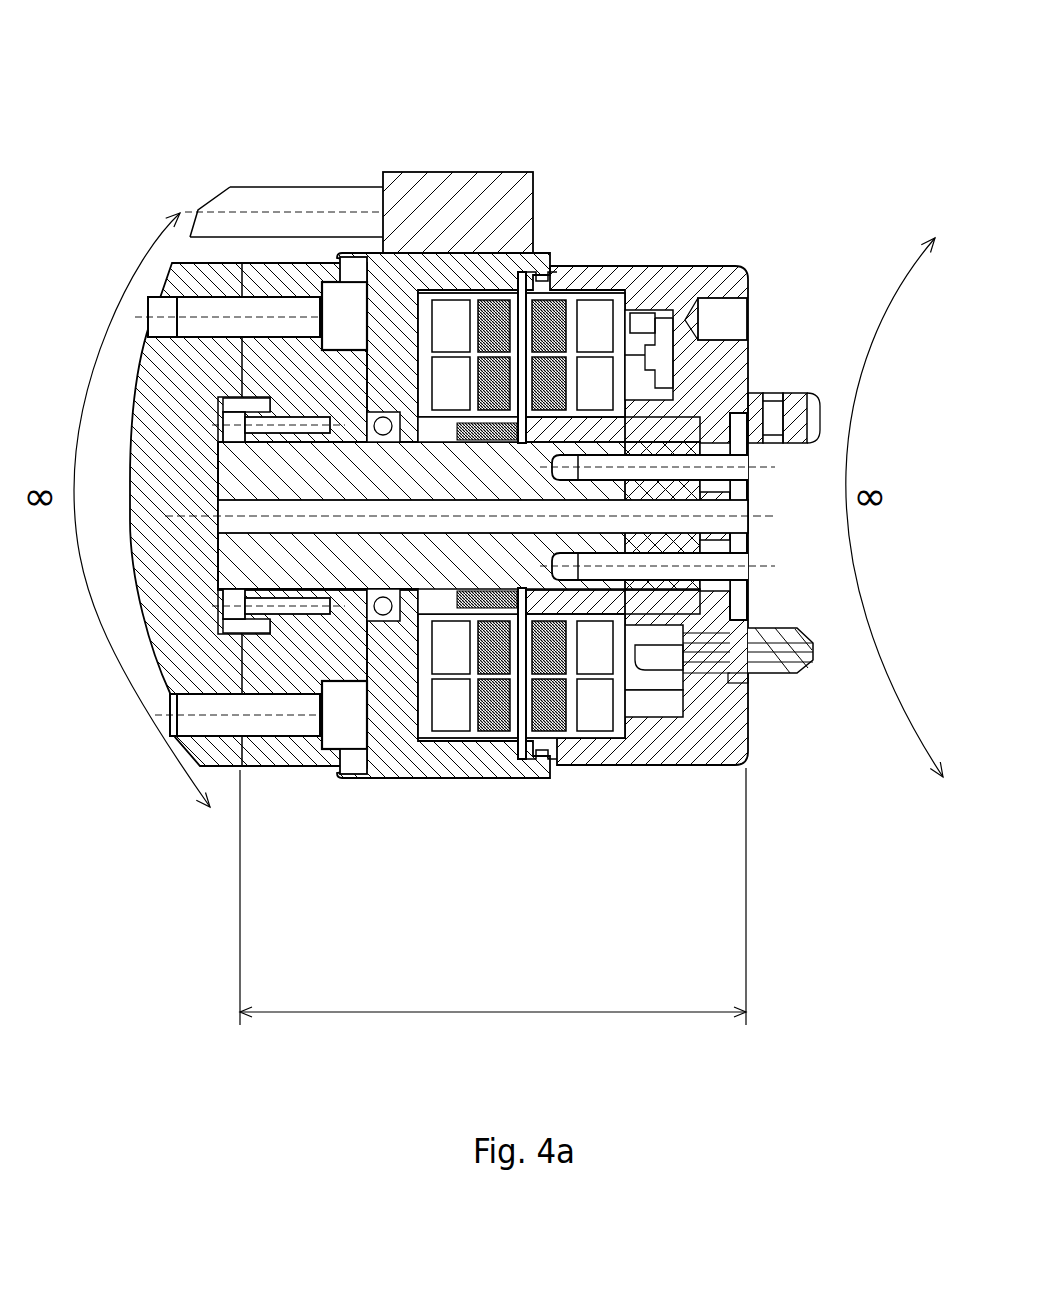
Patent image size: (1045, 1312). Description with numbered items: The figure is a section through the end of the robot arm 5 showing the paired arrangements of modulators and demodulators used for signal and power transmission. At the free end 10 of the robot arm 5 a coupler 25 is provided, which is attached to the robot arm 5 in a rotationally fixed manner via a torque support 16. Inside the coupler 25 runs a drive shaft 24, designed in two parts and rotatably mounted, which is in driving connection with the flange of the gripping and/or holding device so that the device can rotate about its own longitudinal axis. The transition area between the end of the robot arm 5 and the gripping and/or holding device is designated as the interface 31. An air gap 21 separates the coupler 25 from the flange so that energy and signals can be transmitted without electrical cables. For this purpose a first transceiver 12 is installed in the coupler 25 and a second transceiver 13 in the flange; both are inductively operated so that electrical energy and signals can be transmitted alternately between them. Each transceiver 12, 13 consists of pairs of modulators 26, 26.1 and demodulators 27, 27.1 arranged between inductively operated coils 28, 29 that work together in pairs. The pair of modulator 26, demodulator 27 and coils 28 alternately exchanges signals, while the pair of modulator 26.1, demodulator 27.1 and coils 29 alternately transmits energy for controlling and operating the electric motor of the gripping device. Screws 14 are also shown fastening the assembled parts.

The robot arm 5 is at (225, 640).
The free end 10 is at (245, 685).
The first transceiver 12 is at (368, 757).
The second transceiver 13 is at (640, 720).
The screws 14 is at (440, 390).
The torque support 16 is at (347, 207).
The air gap 21 is at (518, 780).
The drive shaft 24 is at (560, 280).
The coupler 25 is at (487, 113).
The modulator 26 is at (630, 735).
The modulator 26.1 is at (597, 728).
The demodulator 27 is at (440, 690).
The demodulator 27.1 is at (455, 722).
The coil 28 is at (490, 735).
The coil 29 is at (500, 740).
The interface 31 is at (458, 1016).